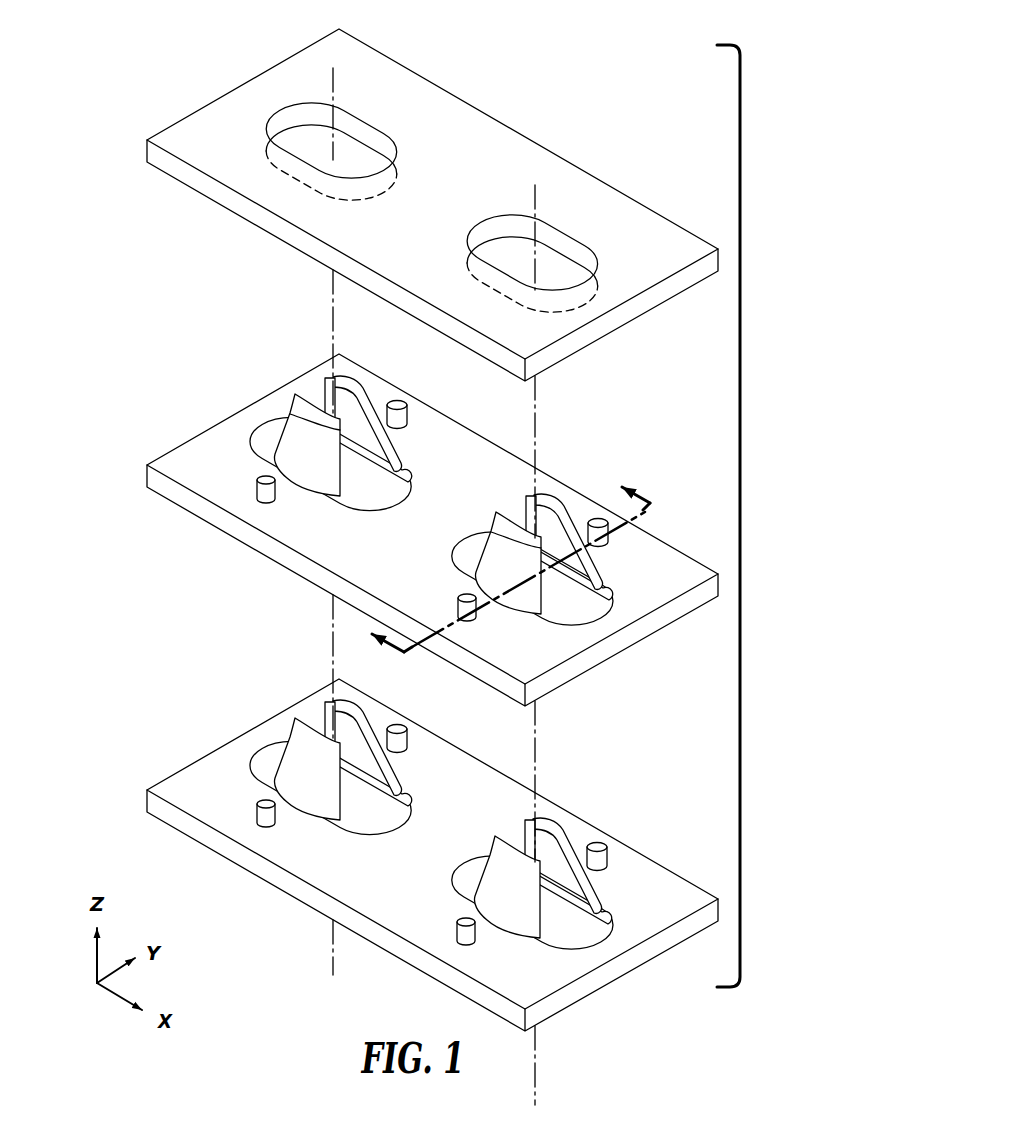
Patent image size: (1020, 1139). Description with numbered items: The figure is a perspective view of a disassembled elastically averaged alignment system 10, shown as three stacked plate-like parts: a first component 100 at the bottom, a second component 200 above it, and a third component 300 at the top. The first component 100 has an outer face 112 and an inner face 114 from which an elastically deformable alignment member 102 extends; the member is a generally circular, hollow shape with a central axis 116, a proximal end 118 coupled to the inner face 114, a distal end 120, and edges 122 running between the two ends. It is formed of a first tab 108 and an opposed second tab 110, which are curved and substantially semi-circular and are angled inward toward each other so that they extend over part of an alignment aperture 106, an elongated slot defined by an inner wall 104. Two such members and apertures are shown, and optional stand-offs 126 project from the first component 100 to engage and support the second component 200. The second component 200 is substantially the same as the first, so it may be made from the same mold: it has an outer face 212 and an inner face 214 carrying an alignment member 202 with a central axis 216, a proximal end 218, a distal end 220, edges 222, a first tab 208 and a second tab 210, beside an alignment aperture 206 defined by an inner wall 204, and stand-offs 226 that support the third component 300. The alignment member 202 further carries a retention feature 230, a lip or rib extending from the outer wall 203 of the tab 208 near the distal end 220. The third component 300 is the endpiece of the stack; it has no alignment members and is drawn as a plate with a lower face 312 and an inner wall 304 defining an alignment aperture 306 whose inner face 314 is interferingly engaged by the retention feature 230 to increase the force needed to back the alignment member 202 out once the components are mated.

The elastically averaged alignment system 10 is at (742, 471).
The first component 100 is at (147, 759).
The elastically deformable alignment member 102 is at (306, 714).
The inner wall 104 is at (408, 800).
The alignment aperture 106 is at (480, 876).
The first segment or tab 108 is at (312, 790).
The second segment or tab 110 is at (368, 720).
The outer face 112 is at (205, 845).
The inner face 114 is at (205, 765).
The central axis 116 is at (325, 641).
The proximal end 118 is at (473, 907).
The distal end 120 is at (284, 726).
The edges 122 is at (270, 775).
The stand-offs 126 is at (403, 726).
The second component 200 is at (147, 437).
The elastically deformable alignment member 202 is at (304, 392).
The outer wall 203 is at (290, 446).
The inner wall 204 is at (405, 466).
The alignment aperture 206 is at (464, 548).
The first segment or tab 208 is at (292, 480).
The second segment or tab 210 is at (373, 375).
The outer face 212 is at (208, 522).
The inner face 214 is at (225, 432).
The central axis 216 is at (325, 290).
The proximal end 218 is at (472, 576).
The distal end 220 is at (582, 515).
The edges 222 is at (322, 378).
The stand-offs 226 is at (405, 401).
The retention feature 230 is at (317, 440).
The third component 300 is at (147, 130).
The inner wall 304 is at (362, 128).
The alignment aperture 306 is at (508, 254).
The lower surface 312 is at (205, 200).
The inner face 314 is at (250, 100).